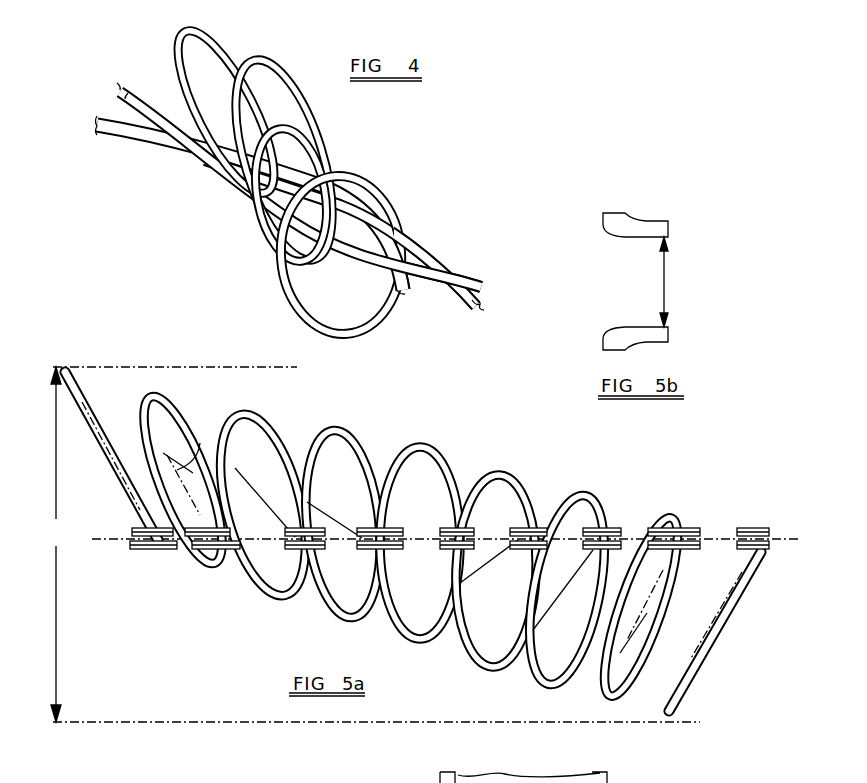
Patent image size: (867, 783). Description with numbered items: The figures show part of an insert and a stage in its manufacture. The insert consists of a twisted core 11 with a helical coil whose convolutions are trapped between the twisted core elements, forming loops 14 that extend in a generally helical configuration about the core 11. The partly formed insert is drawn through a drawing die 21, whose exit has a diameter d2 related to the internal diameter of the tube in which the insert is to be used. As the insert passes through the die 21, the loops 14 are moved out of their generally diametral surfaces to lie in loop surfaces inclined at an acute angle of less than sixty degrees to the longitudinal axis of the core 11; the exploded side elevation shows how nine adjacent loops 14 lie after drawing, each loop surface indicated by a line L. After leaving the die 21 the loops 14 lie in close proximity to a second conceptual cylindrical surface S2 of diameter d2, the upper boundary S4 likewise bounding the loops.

In FIG. 4, the core 11 is at (433, 251).
In FIG. 4, the loop 14 is at (172, 34).
In FIG. 5A, the loop 14 is at (665, 716).
In FIG. 5A, the drawing die 21 is at (449, 538).
In FIG. 5B, the drawing die 21 is at (630, 219).
In FIG. 5A, the loop plane line L is at (116, 445).
In FIG. 5A, the second conceptual cylindrical surface S2 is at (213, 723).
In FIG. 5A, the upper plane S4 is at (297, 365).
In FIG. 5A, the diameter of the exit of the die d2 is at (60, 544).
In FIG. 5B, the diameter of the exit of the die d2 is at (675, 282).